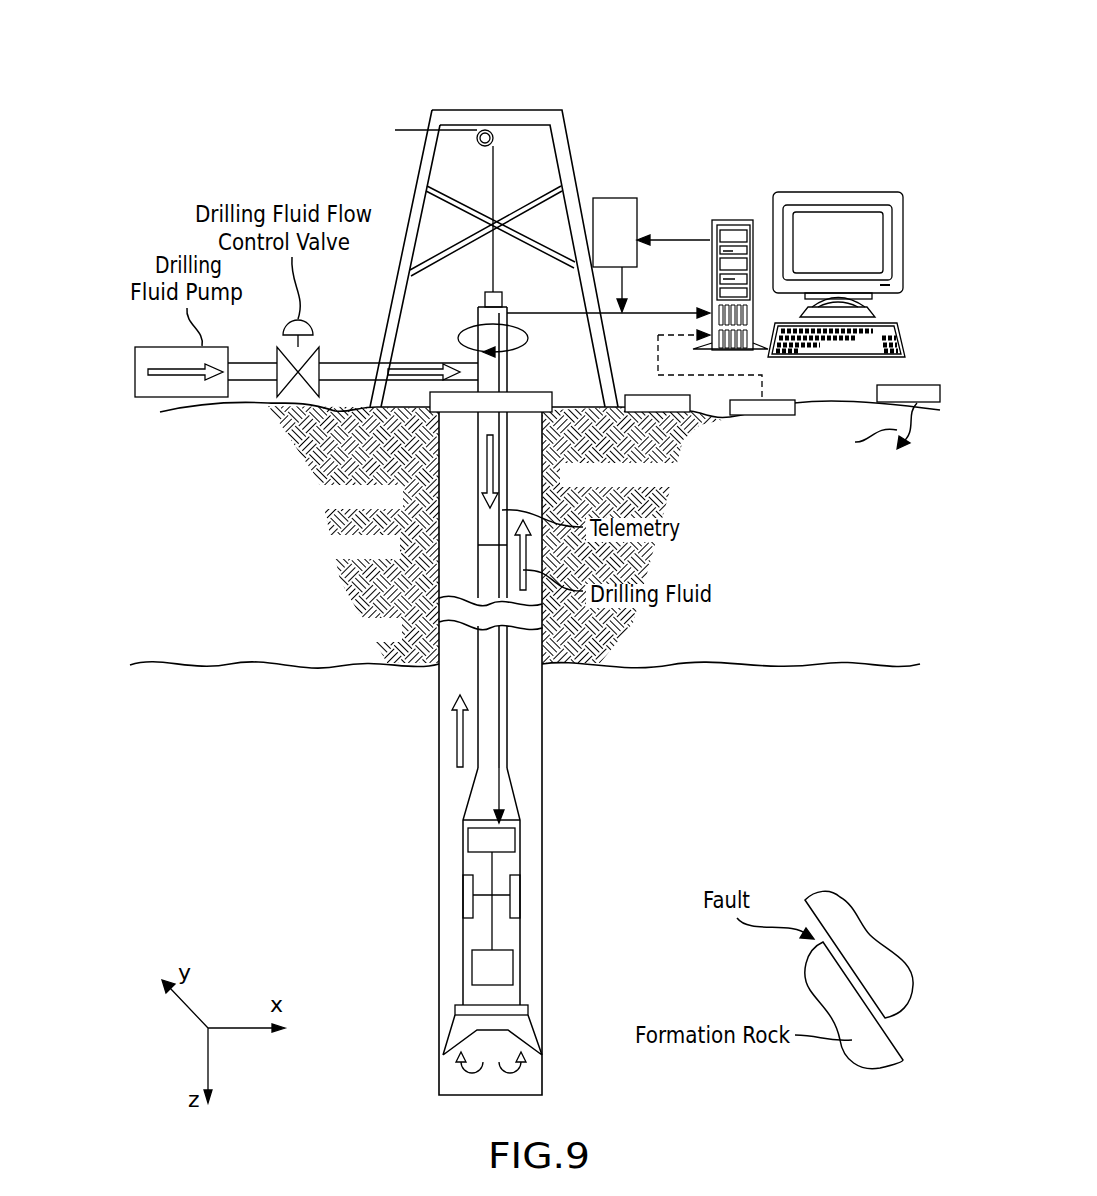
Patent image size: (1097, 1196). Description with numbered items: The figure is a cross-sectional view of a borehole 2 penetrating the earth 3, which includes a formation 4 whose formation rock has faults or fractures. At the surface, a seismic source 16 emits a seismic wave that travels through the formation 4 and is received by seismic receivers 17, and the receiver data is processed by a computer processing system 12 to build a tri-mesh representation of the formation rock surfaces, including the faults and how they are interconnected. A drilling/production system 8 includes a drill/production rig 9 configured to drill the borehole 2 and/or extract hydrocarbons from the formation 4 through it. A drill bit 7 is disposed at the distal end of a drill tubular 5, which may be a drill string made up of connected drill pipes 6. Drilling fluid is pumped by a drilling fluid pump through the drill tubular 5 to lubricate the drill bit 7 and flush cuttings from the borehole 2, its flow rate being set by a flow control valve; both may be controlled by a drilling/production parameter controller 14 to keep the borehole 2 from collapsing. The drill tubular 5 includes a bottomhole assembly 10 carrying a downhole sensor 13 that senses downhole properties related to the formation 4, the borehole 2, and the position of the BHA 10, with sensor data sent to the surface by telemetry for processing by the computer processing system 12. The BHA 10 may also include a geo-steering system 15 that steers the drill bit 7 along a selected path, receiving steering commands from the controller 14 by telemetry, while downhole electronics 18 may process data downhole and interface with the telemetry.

The borehole 2 is at (460, 566).
The earth 3 is at (296, 446).
The formation 4 is at (334, 712).
The drill tubular 5 is at (498, 651).
The drill pipe 6 is at (500, 518).
The drill bit 7 is at (462, 1030).
The drilling/production system 8 is at (822, 70).
The drill/production rig 9 is at (497, 108).
The bottomhole assembly (BHA) 10 is at (468, 800).
The computer processing system 12 is at (731, 218).
The downhole sensor 13 is at (482, 970).
The drilling/production parameter controller 14 is at (625, 197).
The geo-steering system 15 is at (468, 895).
The seismic source 16 is at (927, 403).
The seismic receiver 17 is at (680, 445).
The downhole electronics 18 is at (505, 842).